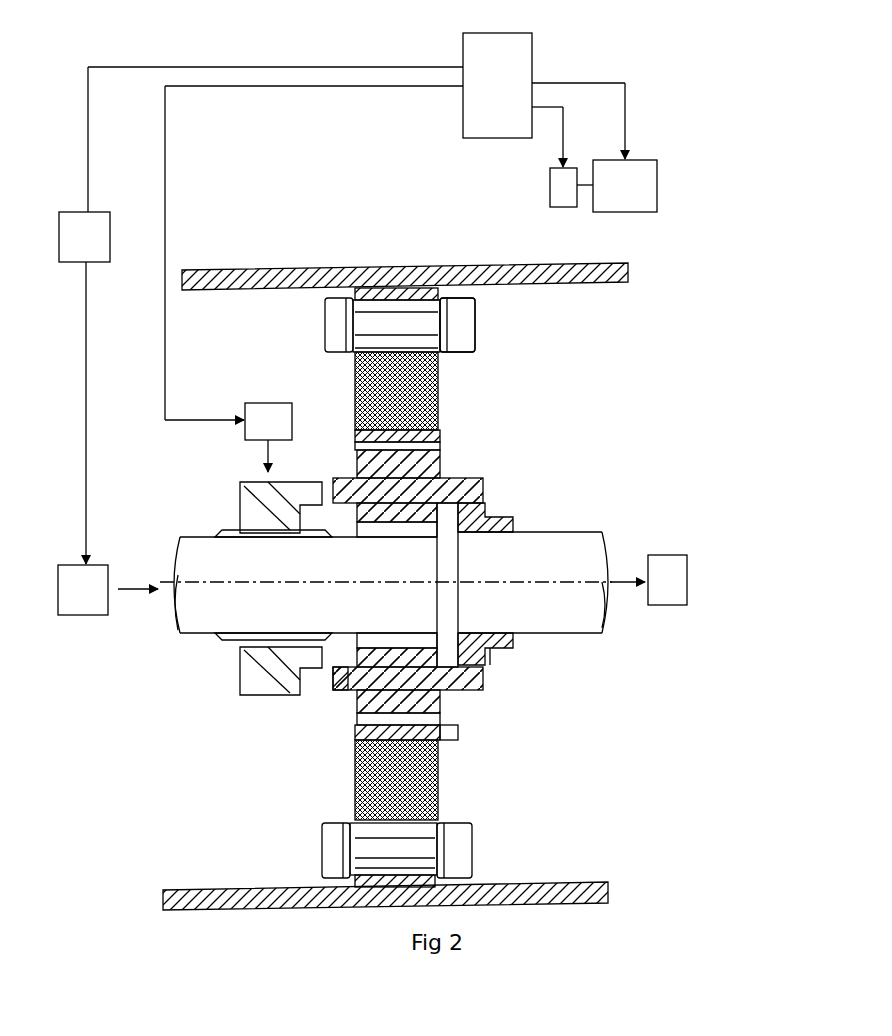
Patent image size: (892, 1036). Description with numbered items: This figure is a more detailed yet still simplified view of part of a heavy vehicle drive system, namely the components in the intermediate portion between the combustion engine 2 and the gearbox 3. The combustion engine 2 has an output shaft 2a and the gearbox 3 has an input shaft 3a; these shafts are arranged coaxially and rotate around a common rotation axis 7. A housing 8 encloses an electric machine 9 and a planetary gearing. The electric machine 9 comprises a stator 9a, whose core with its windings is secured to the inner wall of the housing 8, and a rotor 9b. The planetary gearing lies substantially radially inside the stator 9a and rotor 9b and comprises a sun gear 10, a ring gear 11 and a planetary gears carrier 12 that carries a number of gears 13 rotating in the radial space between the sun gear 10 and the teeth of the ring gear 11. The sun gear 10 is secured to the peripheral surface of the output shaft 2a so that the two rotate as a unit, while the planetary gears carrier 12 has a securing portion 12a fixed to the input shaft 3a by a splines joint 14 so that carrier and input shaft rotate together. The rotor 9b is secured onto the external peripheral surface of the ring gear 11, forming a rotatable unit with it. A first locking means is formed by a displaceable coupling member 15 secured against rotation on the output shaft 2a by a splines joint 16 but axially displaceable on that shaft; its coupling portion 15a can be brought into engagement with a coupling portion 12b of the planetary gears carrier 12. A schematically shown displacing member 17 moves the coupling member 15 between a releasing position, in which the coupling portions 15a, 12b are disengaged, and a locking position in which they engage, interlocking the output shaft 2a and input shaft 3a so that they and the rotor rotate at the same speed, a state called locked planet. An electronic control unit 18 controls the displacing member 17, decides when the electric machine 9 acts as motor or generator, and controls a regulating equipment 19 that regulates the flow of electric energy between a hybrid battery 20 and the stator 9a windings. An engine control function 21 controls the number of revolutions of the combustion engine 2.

The combustion engine 2 is at (85, 595).
The output shaft 2a is at (205, 612).
The gearbox 3 is at (670, 585).
The input shaft 3a is at (560, 612).
The rotation axis 7 is at (565, 578).
The housing 8 is at (250, 888).
The electric machine 9 is at (309, 327).
The stator 9a is at (458, 333).
The rotor 9b is at (355, 382).
The sun gear 10 is at (380, 528).
The ring gear 11 is at (383, 438).
The planetary gears carrier 12 is at (455, 734).
The securing portion 12a is at (495, 650).
The coupling portion 12b is at (337, 674).
The gears 13 is at (387, 470).
The splines joint 14 is at (510, 637).
The coupling member 15 is at (255, 518).
The coupling portion 15a is at (312, 683).
The splines joint 16 is at (245, 538).
The displacing member 17 is at (268, 413).
The electronic control unit 18 is at (356, 100).
The regulating equipment 19 is at (560, 183).
The hybrid battery 20 is at (632, 185).
The engine control function 21 is at (87, 232).